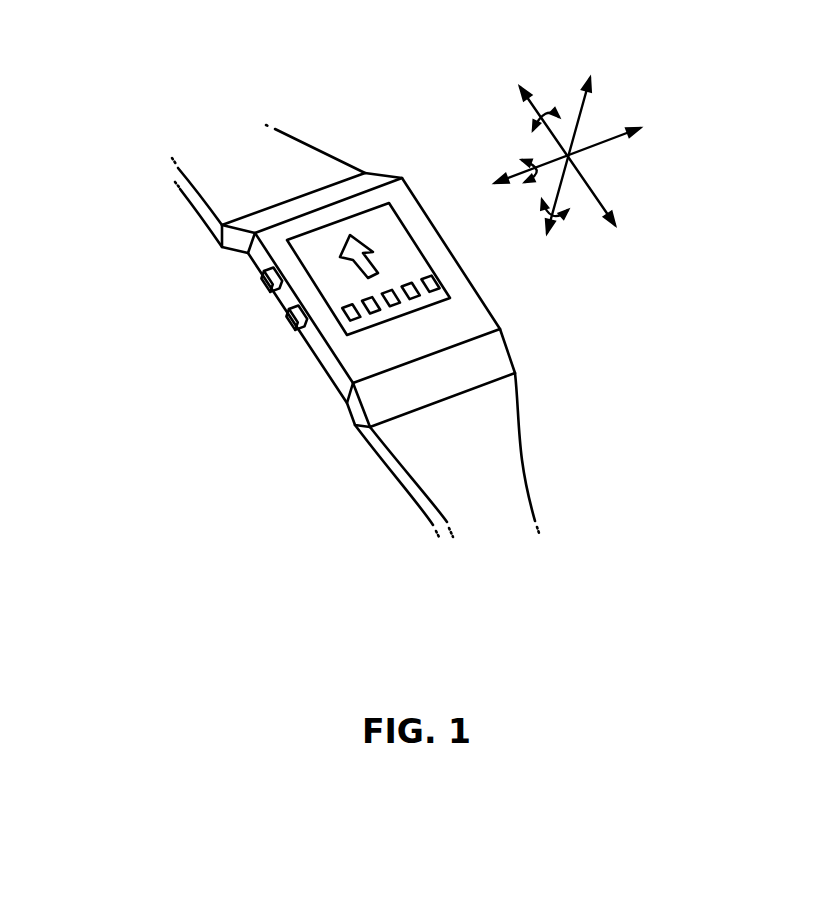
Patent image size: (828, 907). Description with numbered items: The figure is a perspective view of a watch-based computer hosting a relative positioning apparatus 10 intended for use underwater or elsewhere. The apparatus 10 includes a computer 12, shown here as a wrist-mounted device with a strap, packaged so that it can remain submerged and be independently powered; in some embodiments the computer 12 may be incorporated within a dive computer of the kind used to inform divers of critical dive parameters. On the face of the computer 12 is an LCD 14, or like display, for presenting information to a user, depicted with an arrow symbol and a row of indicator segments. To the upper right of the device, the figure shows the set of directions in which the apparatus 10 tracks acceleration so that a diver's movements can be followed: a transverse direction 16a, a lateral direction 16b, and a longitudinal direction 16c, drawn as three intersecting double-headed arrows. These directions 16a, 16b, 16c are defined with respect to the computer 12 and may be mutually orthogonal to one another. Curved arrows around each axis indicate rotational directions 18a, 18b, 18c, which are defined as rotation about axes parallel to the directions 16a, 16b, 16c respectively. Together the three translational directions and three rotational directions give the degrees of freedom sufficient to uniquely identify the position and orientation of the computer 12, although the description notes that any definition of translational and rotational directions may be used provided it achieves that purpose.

The relative positioning apparatus 10 is at (292, 352).
The computer 12 is at (372, 300).
The LCD 14 is at (395, 260).
The transverse direction 16a is at (585, 100).
The lateral direction 16b is at (617, 145).
The longitudinal direction 16c is at (598, 197).
The rotational direction 18a is at (562, 220).
The rotational direction 18b is at (527, 157).
The rotational direction 18c is at (553, 105).